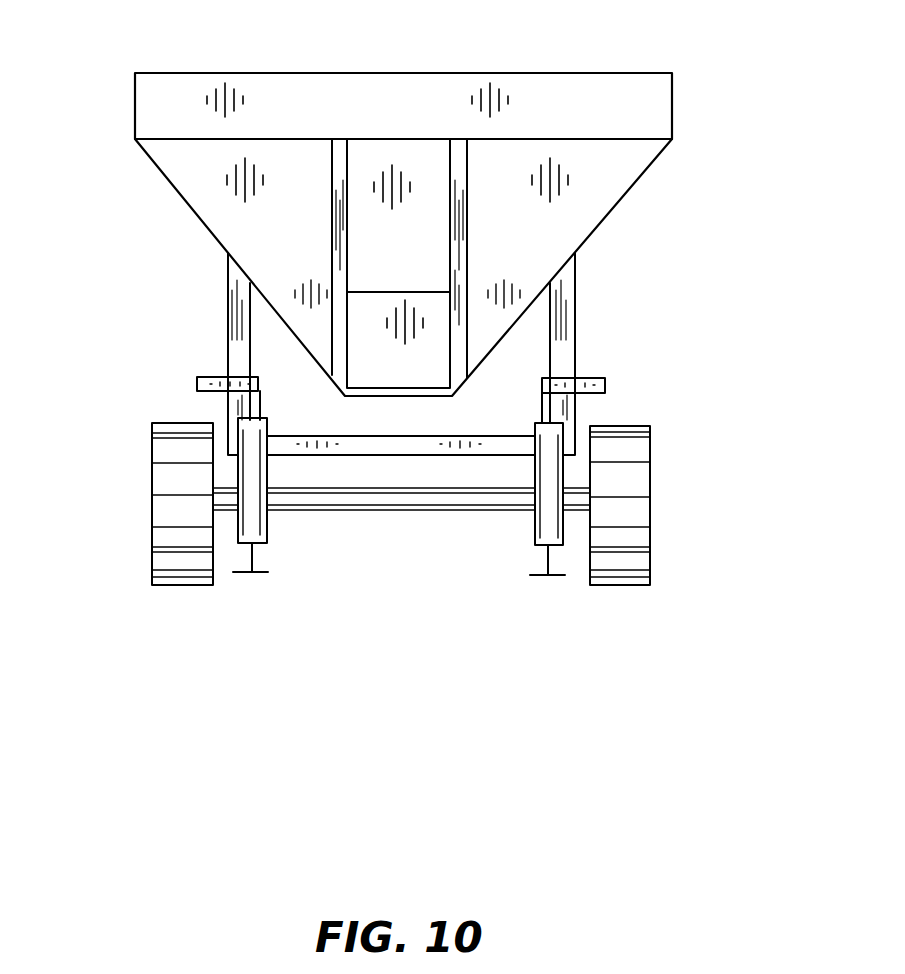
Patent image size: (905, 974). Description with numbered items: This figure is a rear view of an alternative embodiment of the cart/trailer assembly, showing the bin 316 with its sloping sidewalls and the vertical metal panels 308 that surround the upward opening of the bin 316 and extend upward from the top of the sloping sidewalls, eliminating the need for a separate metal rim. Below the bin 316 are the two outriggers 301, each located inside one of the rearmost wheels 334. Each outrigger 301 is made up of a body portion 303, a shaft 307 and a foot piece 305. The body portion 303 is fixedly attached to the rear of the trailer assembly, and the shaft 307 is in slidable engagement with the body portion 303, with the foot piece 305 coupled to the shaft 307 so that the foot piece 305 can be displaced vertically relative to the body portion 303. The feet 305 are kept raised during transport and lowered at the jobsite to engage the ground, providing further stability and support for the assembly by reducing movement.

The metal panels 308 is at (638, 110).
The bin 316 is at (582, 210).
The outriggers 301 is at (217, 375).
The body portion 303 is at (267, 515).
The rearmost wheels 334 is at (152, 487).
The shaft 307 is at (253, 555).
The foot piece 305 is at (247, 577).